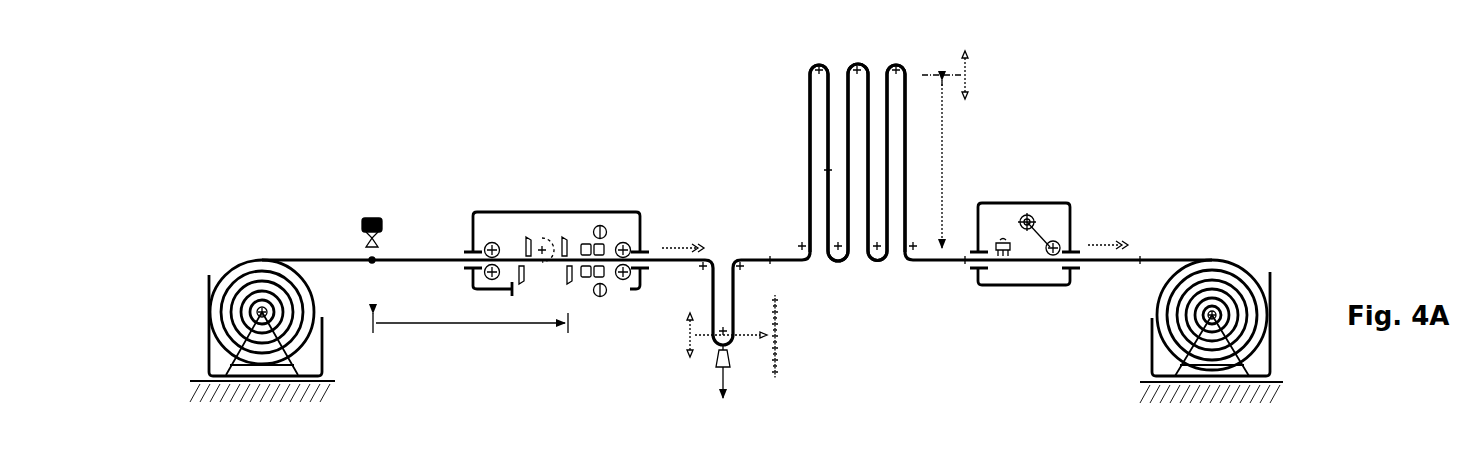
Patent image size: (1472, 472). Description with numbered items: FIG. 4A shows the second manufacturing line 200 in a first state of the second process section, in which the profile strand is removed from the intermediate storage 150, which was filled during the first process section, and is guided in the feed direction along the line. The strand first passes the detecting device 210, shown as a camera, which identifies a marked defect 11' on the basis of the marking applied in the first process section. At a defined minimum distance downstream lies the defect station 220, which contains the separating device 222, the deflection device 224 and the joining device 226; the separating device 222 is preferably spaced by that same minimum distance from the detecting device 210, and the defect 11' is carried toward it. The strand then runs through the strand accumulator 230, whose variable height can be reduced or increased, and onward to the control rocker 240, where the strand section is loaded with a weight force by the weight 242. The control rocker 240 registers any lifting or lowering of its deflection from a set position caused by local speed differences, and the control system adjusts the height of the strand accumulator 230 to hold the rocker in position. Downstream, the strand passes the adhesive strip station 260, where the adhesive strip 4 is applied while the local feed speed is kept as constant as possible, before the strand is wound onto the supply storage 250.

The second manufacturing line 200 is at (193, 155).
The marked defect 11' is at (737, 204).
The intermediate storage 150 is at (220, 310).
The detecting device 210 is at (372, 216).
The defect station 220 is at (566, 258).
The separating device 222 is at (565, 236).
The deflection device 224 is at (547, 259).
The joining device 226 is at (603, 226).
The second strand accumulator 230 is at (868, 48).
The control rocker 240 is at (734, 367).
The control rocker weight 242 is at (712, 358).
The adhesive strip 4 is at (1032, 216).
The supply storage 250 is at (1237, 252).
The adhesive strip station 260 is at (1031, 240).